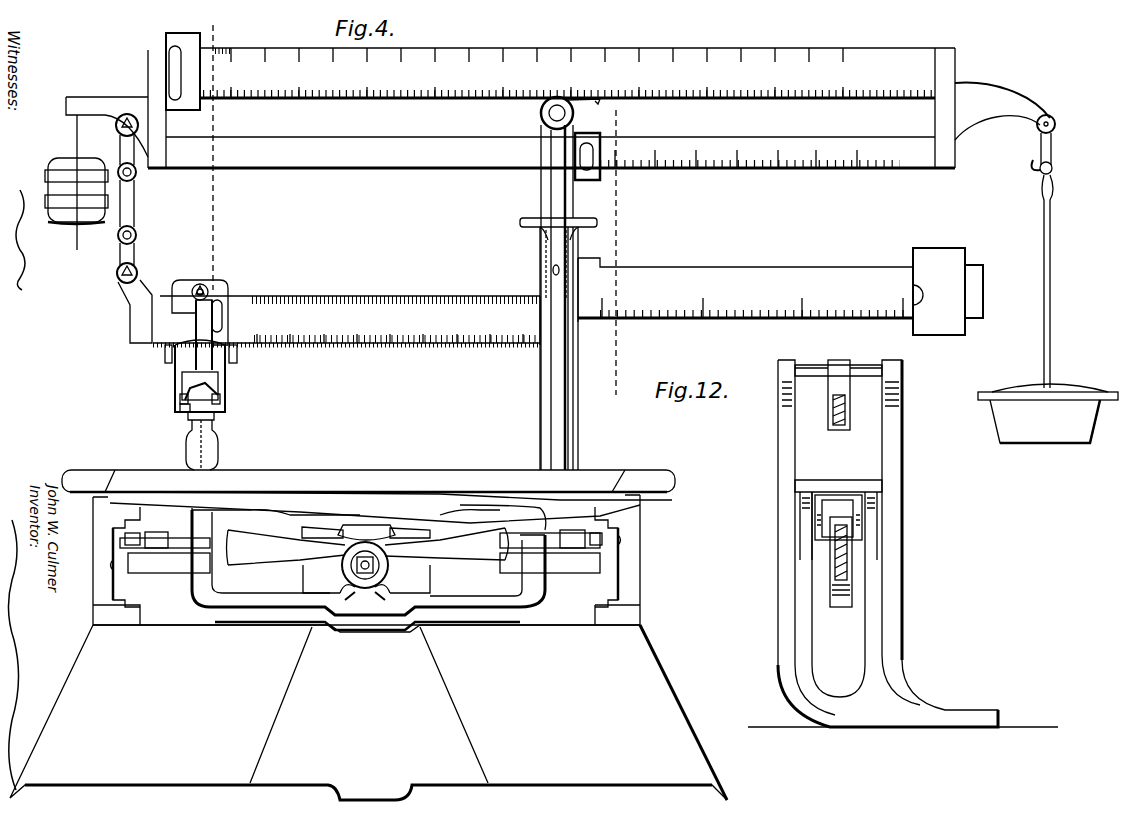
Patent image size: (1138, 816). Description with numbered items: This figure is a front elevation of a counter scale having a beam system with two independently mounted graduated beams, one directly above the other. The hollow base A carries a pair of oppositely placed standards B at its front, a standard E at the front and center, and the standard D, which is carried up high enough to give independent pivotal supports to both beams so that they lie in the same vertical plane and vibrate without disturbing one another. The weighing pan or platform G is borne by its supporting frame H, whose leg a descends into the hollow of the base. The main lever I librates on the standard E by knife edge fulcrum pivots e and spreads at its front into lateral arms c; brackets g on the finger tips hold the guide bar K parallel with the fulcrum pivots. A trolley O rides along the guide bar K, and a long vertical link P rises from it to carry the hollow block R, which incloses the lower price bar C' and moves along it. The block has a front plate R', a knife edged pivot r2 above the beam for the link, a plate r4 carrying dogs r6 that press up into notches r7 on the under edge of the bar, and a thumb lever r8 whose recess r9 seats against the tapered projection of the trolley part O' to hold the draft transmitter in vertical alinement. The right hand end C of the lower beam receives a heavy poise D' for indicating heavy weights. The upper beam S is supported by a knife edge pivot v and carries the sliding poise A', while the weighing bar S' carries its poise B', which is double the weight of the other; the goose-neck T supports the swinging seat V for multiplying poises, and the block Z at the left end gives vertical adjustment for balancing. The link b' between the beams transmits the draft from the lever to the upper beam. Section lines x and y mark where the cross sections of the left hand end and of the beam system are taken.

In FIG. 4, the sliding poise A' is at (196, 60).
In FIG. 4, the weighing beam S is at (551, 97).
In FIG. 4, the weighing bar S' is at (750, 171).
In FIG. 12, the weighing bar S' is at (851, 410).
In FIG. 4, the sliding poise B' is at (608, 150).
In FIG. 4, the hanger strap t is at (540, 134).
In FIG. 12, the hanger strap t is at (833, 365).
In FIG. 4, the knife edge pivot v is at (583, 111).
In FIG. 12, the knife edge pivot v is at (862, 370).
In FIG. 4, the section line x is at (206, 150).
In FIG. 4, the section line y is at (591, 391).
In FIG. 4, the goose-neck T is at (1022, 235).
In FIG. 4, the swinging seat V is at (1048, 400).
In FIG. 4, the block Z is at (65, 215).
In FIG. 4, the link b' is at (111, 220).
In FIG. 4, the right hand end of lower beam C is at (745, 285).
In FIG. 12, the right hand end of lower beam C is at (880, 562).
In FIG. 4, the heavy poise D' is at (948, 291).
In FIG. 4, the standard D is at (561, 344).
In FIG. 12, the standard D is at (888, 543).
In FIG. 4, the pivot in column a' is at (531, 265).
In FIG. 4, the price bar C' is at (350, 340).
In FIG. 4, the notches r7 is at (358, 345).
In FIG. 4, the dogs r6 is at (160, 355).
In FIG. 4, the knife edged pivot r2 is at (205, 290).
In FIG. 4, the link P is at (222, 367).
In FIG. 4, the hollow block R is at (181, 376).
In FIG. 4, the plate R' is at (234, 398).
In FIG. 4, the recess r9 is at (180, 397).
In FIG. 4, the plate r4 is at (180, 405).
In FIG. 4, the thumb lever r8 is at (218, 395).
In FIG. 4, the trolley part O' is at (173, 431).
In FIG. 4, the trolley O is at (210, 445).
In FIG. 4, the weighing pan G is at (368, 485).
In FIG. 4, the standards B is at (367, 560).
In FIG. 4, the bracket g is at (612, 528).
In FIG. 4, the guide bar K is at (180, 540).
In FIG. 4, the nut c' is at (363, 530).
In FIG. 4, the lateral arms c is at (364, 573).
In FIG. 4, the knife edge fulcrum pivots e is at (225, 540).
In FIG. 4, the standard E is at (392, 620).
In FIG. 4, the lever I is at (265, 578).
In FIG. 4, the lever pivot bearing N is at (430, 582).
In FIG. 4, the supporting frame H is at (530, 512).
In FIG. 4, the hollow base A is at (368, 712).
In FIG. 12, the leg a is at (872, 517).